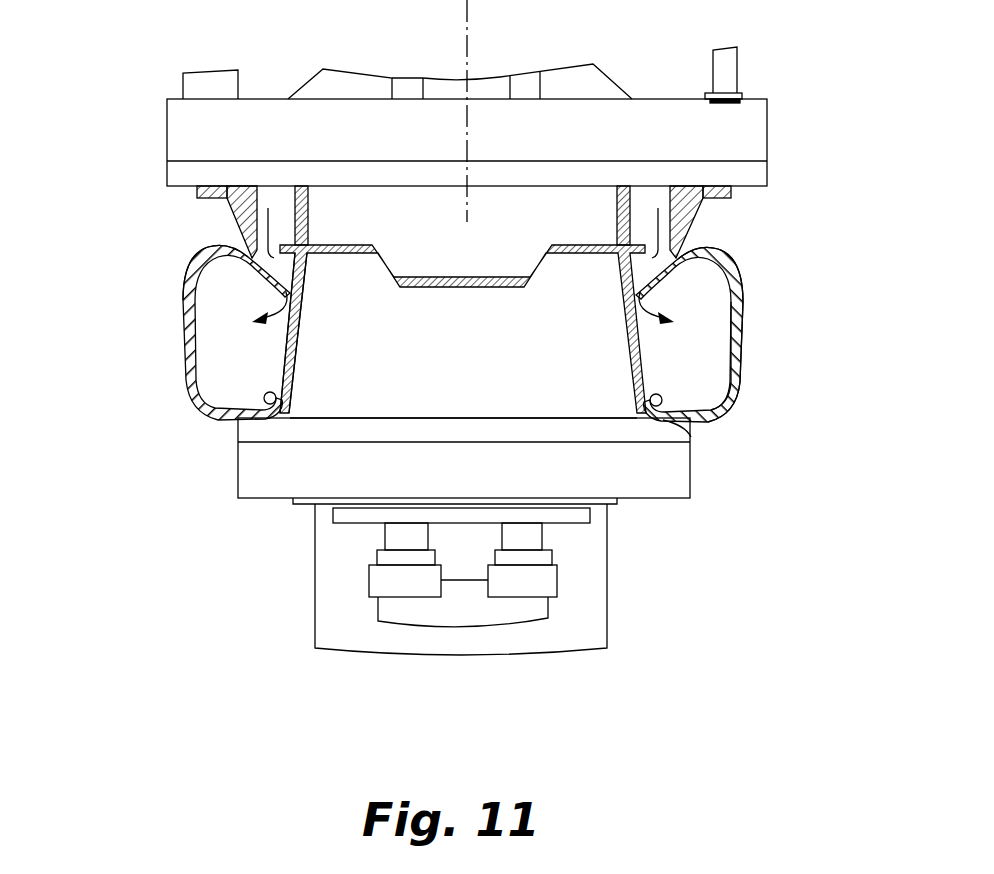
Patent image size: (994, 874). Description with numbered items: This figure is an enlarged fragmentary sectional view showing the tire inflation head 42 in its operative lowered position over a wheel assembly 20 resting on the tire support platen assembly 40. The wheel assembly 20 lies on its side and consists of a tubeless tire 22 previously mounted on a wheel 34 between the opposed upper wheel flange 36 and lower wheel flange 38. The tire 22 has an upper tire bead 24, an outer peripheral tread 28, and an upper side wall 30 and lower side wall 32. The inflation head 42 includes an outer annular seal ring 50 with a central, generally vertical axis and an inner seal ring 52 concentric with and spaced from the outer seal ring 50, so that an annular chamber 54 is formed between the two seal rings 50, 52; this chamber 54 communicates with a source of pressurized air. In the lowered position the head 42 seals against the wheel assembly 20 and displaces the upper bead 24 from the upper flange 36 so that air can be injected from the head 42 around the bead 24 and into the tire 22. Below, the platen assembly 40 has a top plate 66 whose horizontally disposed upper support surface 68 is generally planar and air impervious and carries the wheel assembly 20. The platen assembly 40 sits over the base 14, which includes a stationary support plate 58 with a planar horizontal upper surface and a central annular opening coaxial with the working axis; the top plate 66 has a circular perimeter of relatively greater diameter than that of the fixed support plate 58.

The base 14 is at (595, 612).
The wheel assembly 20 is at (458, 338).
The tubeless tire 22 is at (738, 362).
The upper tire bead 24 is at (374, 329).
The outer peripheral tread 28 is at (743, 317).
The upper side wall 30 is at (700, 250).
The lower side wall 32 is at (693, 436).
The wheel 34 is at (288, 343).
The upper wheel flange 36 is at (223, 245).
The lower wheel flange 38 is at (263, 388).
The tire support platen assembly 40 is at (442, 423).
The tire inflation head 42 is at (773, 148).
The outer annular seal ring 50 is at (700, 215).
The inner seal ring 52 is at (615, 210).
The annular chamber 54 is at (642, 202).
The stationary support plate 58 is at (295, 502).
The top plate 66 is at (700, 470).
The upper support surface 68 is at (457, 418).